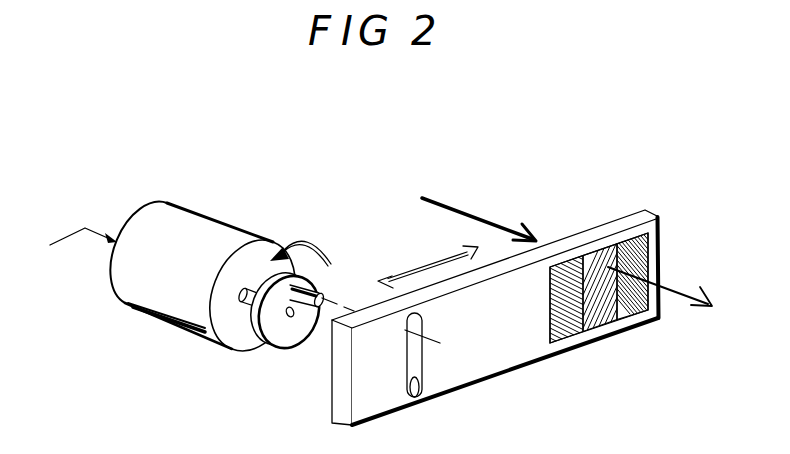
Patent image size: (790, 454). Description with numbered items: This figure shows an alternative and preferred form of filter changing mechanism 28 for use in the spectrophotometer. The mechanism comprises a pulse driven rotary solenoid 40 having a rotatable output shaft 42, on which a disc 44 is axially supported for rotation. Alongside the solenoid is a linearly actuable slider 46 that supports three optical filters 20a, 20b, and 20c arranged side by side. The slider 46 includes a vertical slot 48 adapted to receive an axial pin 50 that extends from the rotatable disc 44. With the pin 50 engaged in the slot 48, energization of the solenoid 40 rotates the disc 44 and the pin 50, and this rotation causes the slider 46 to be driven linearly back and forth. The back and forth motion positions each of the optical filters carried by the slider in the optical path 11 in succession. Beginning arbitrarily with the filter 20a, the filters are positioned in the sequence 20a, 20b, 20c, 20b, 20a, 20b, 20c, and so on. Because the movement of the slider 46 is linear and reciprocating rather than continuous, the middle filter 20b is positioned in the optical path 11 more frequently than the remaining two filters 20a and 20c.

The optical path 11 is at (457, 202).
The filter 20a is at (563, 343).
The middle filter 20b is at (613, 322).
The filter 20c is at (631, 320).
The drive assembly 28 is at (68, 245).
The pulse driven rotary solenoid 40 is at (166, 203).
The rotatable output shaft 42 is at (247, 305).
The disc 44 is at (286, 350).
The linearly actuable slider 46 is at (645, 208).
The vertical slot 48 is at (411, 398).
The axial pin 50 is at (321, 290).